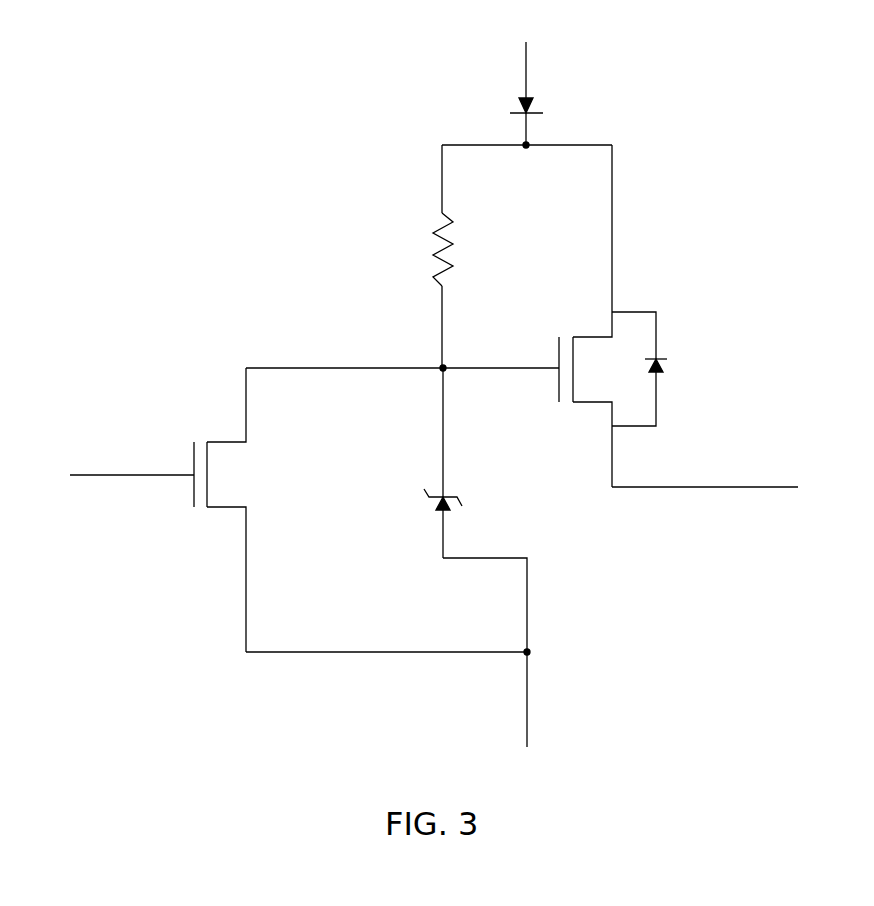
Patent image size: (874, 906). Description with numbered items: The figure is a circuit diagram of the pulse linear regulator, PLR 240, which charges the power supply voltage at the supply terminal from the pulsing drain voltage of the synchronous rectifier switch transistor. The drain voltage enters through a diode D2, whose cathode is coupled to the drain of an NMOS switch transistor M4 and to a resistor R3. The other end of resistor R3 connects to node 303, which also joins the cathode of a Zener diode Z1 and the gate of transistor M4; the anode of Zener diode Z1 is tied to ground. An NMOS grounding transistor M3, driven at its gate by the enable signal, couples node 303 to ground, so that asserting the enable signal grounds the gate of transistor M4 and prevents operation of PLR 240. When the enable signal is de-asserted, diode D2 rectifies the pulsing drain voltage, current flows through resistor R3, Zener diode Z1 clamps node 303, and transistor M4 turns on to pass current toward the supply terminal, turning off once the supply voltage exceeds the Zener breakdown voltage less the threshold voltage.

The pulse linear regulator 240 is at (418, 43).
The node 303 is at (441, 366).
The resistor R3 is at (423, 256).
The diode D2 is at (544, 93).
The Zener diode Z1 is at (436, 463).
The NMOS grounding transistor M3 is at (242, 510).
The NMOS switch transistor M4 is at (608, 316).